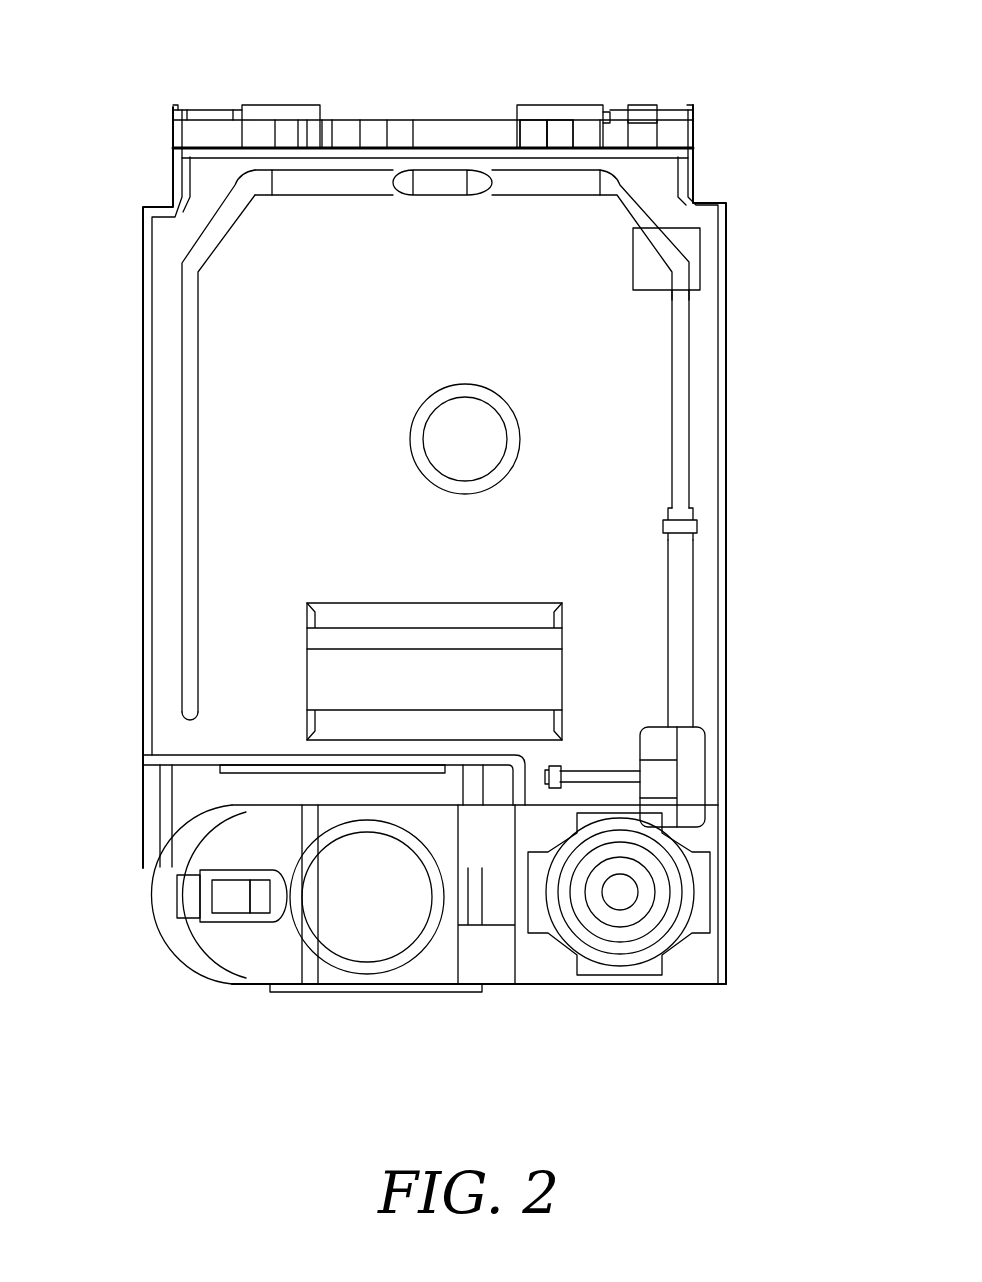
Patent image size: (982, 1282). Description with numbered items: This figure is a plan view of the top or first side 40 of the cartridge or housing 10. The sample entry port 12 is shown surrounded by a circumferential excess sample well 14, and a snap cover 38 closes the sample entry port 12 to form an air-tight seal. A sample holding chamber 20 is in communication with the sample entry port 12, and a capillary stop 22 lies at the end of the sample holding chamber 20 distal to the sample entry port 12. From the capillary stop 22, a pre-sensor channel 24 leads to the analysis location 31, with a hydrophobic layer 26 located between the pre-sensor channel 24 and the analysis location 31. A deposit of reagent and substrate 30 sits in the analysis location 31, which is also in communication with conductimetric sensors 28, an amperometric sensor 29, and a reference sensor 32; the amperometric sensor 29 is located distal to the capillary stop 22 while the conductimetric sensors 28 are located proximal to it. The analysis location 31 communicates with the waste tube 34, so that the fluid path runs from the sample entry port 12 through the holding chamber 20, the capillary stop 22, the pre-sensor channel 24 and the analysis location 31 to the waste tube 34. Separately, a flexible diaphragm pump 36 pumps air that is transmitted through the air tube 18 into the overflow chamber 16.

The cartridge 10 is at (460, 1005).
The sample entry port 12 is at (620, 890).
The circumferential excess sample well 14 is at (665, 965).
The overflow chamber 16 is at (685, 775).
The air tube 18 is at (605, 770).
The sample holding chamber 20 is at (683, 637).
The capillary stop 22 is at (680, 520).
The pre-sensor channel 24 is at (680, 405).
The hydrophobic layer 26 is at (700, 238).
The conductimetric sensors 28 is at (565, 135).
The amperometric sensor 29 is at (540, 135).
The deposit of reagent and substrate 30 is at (523, 175).
The analysis location 31 is at (437, 182).
The reference sensor 32 is at (323, 140).
The waste tube 34 is at (195, 453).
The flexible diaphragm pump 36 is at (335, 690).
The snap cover 38 is at (215, 953).
The first side 40 is at (227, 441).